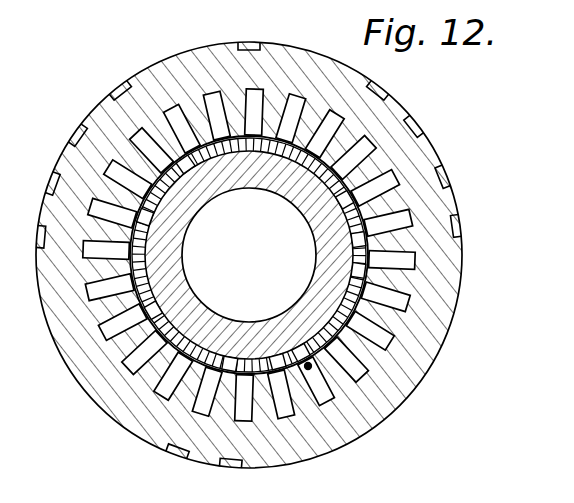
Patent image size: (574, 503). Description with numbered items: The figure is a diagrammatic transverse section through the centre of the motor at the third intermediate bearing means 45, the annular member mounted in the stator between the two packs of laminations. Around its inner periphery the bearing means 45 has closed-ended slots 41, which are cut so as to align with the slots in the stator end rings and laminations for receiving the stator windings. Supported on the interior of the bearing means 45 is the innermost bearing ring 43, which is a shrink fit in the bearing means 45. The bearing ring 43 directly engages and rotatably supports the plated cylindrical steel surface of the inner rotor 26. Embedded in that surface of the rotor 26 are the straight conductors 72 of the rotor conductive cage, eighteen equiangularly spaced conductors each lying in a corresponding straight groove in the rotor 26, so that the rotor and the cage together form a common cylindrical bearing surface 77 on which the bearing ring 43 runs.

The third intermediate bearing means 45 is at (438, 262).
The closed-ended slots 41 is at (106, 292).
The inner rotor 26 is at (237, 335).
The bearing ring 43 is at (211, 150).
The straight conductors 72 is at (347, 268).
The common cylindrical bearing surface 77 is at (310, 368).